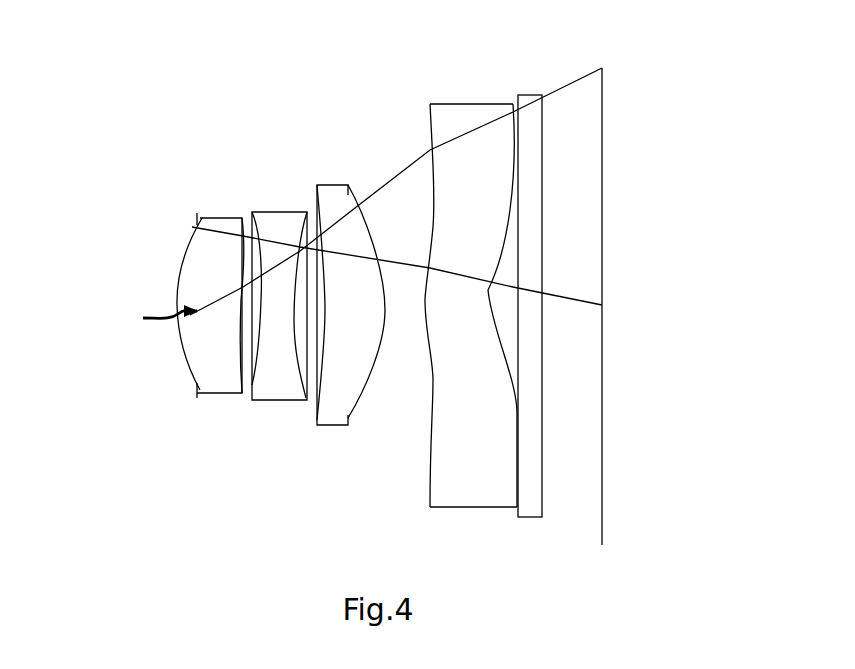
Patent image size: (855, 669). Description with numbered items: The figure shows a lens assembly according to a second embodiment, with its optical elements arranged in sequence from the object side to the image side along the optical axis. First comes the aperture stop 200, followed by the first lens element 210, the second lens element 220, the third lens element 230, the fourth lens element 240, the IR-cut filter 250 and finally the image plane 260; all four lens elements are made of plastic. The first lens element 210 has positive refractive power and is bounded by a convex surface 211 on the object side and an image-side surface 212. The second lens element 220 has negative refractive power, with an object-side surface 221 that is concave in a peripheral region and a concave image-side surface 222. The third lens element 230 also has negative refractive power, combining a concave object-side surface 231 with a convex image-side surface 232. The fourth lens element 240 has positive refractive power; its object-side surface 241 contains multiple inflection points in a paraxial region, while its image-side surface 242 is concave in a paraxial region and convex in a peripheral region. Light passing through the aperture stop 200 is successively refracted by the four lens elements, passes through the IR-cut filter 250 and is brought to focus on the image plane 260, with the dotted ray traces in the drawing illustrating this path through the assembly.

The aperture stop 200 is at (374, 277).
The first lens element 210 is at (194, 304).
The object-side surface of first lens element 211 is at (188, 370).
The image-side surface of first lens element 212 is at (242, 368).
The second lens element 220 is at (258, 313).
The object-side surface of second lens element 221 is at (254, 383).
The image-side surface of second lens element 222 is at (302, 380).
The third lens element 230 is at (328, 308).
The object-side surface of third lens element 231 is at (317, 415).
The image-side surface of third lens element 232 is at (358, 402).
The fourth lens element 240 is at (448, 285).
The object-side surface of fourth lens element 241 is at (432, 417).
The image-side surface of fourth lens element 242 is at (517, 453).
The IR-cut filter 250 is at (533, 96).
The image plane 260 is at (606, 103).